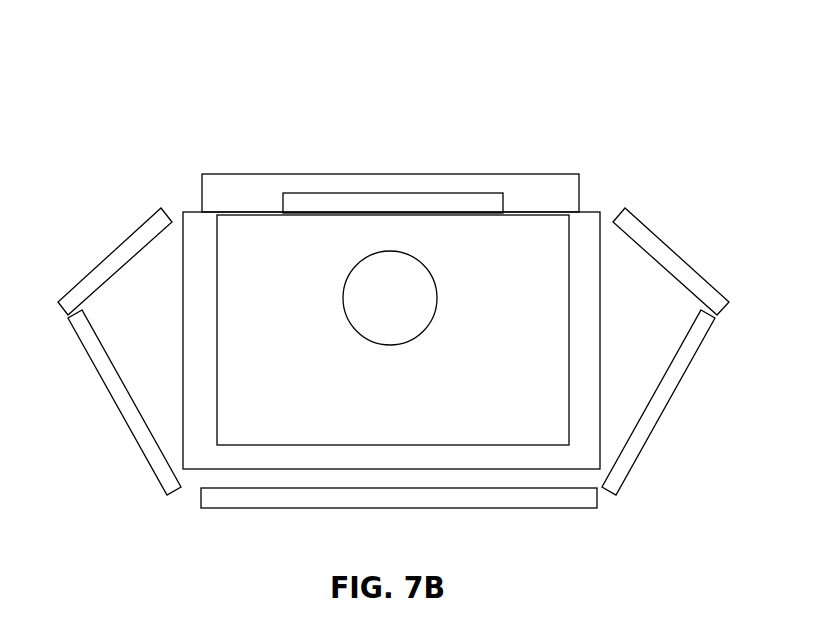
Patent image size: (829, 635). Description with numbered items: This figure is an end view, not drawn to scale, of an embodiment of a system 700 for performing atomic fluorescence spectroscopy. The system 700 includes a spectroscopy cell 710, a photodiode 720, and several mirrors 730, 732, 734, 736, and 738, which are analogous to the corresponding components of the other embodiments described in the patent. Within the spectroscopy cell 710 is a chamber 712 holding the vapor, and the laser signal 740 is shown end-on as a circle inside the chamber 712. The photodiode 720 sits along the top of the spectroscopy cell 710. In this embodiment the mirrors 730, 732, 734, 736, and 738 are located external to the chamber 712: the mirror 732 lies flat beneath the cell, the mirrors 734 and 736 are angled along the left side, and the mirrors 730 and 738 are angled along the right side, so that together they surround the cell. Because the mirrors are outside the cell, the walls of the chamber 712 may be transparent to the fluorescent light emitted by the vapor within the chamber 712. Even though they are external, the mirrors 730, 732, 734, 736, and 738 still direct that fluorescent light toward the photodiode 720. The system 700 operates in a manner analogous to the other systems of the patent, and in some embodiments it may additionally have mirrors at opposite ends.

The system 700 is at (413, 30).
The spectroscopy cell 710 is at (598, 422).
The chamber 712 is at (410, 386).
The photodiode 720 is at (333, 193).
The mirror 730 is at (700, 348).
The mirror 732 is at (502, 508).
The mirror 734 is at (113, 400).
The mirror 736 is at (125, 238).
The mirror 738 is at (672, 247).
The laser signal 740 is at (415, 310).